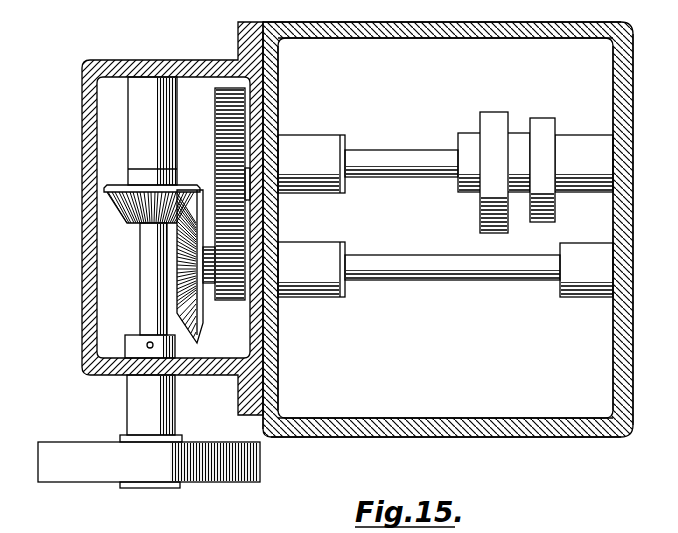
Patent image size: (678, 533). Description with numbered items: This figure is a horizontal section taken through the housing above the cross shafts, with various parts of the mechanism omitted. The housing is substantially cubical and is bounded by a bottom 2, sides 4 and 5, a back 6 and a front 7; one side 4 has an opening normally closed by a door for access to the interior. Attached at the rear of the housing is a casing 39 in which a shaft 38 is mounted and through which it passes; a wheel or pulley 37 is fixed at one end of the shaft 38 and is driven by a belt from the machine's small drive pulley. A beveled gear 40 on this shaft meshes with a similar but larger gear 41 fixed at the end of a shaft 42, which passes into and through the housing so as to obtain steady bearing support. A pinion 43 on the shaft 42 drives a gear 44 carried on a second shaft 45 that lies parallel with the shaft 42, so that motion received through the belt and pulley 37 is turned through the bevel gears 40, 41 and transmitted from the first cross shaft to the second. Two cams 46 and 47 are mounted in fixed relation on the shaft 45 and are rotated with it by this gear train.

The bottom 2 is at (567, 388).
The side 4 is at (487, 430).
The side 5 is at (555, 32).
The back 6 is at (278, 336).
The front 7 is at (628, 318).
The wheel or pulley 37 is at (218, 470).
The shaft 38 is at (145, 300).
The casing 39 is at (84, 234).
The beveled gear 40 is at (125, 213).
The larger gear 41 is at (202, 322).
The shaft 42 is at (400, 272).
The pinion 43 is at (222, 262).
The gear 44 is at (218, 103).
The second shaft 45 is at (395, 165).
The cam 46 is at (488, 200).
The cam 47 is at (545, 210).